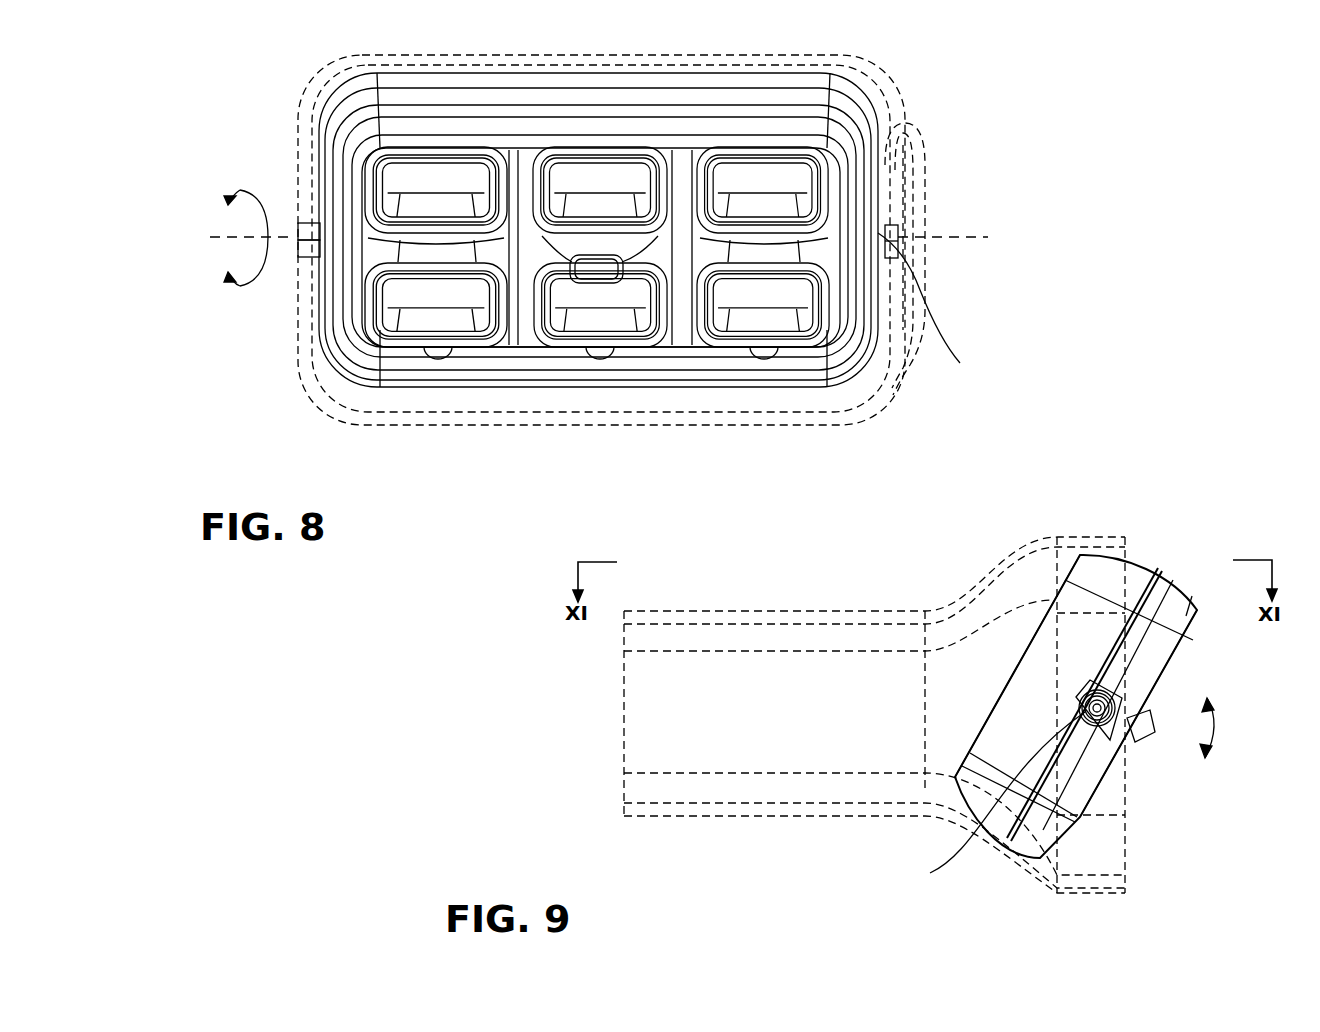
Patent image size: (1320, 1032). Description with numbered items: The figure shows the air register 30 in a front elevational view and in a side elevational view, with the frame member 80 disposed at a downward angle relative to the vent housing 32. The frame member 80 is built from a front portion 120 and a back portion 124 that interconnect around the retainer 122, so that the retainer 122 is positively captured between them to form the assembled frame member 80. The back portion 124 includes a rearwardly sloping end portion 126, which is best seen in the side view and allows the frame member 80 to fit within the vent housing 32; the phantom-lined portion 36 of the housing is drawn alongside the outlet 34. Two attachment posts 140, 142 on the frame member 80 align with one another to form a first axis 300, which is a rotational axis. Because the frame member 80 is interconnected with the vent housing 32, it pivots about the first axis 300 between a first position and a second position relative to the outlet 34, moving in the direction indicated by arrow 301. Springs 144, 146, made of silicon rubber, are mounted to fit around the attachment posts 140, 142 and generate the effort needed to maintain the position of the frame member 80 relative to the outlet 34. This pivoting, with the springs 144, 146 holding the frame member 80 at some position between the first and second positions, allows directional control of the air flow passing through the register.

In FIG. 8, the air register 30 is at (957, 62).
In FIG. 9, the air register 30 is at (870, 566).
In FIG. 8, the vent housing 32 is at (818, 54).
In FIG. 9, the vent housing 32 is at (772, 606).
In FIG. 8, the outlet 34 is at (472, 395).
In FIG. 9, the outlet 34 is at (1108, 844).
In FIG. 9, the housing body 36 is at (623, 694).
In FIG. 8, the frame member 80 is at (860, 124).
In FIG. 9, the frame member 80 is at (1032, 842).
In FIG. 9, the front portion 120 is at (1195, 612).
In FIG. 9, the retainer 122 is at (1172, 585).
In FIG. 9, the back portion 124 is at (1083, 555).
In FIG. 9, the rearwardly sloping end portion 126 is at (1137, 560).
In FIG. 8, the attachment post 140 is at (300, 246).
In FIG. 9, the attachment post 140 is at (1140, 740).
In FIG. 8, the attachment post 142 is at (895, 232).
In FIG. 8, the spring 144 is at (300, 228).
In FIG. 9, the spring 144 is at (1103, 720).
In FIG. 8, the spring 146 is at (936, 260).
In FIG. 8, the first axis 300 is at (213, 237).
In FIG. 9, the first axis 300 is at (986, 800).
In FIG. 8, the arrow 301 is at (238, 190).
In FIG. 9, the arrow 301 is at (1238, 726).